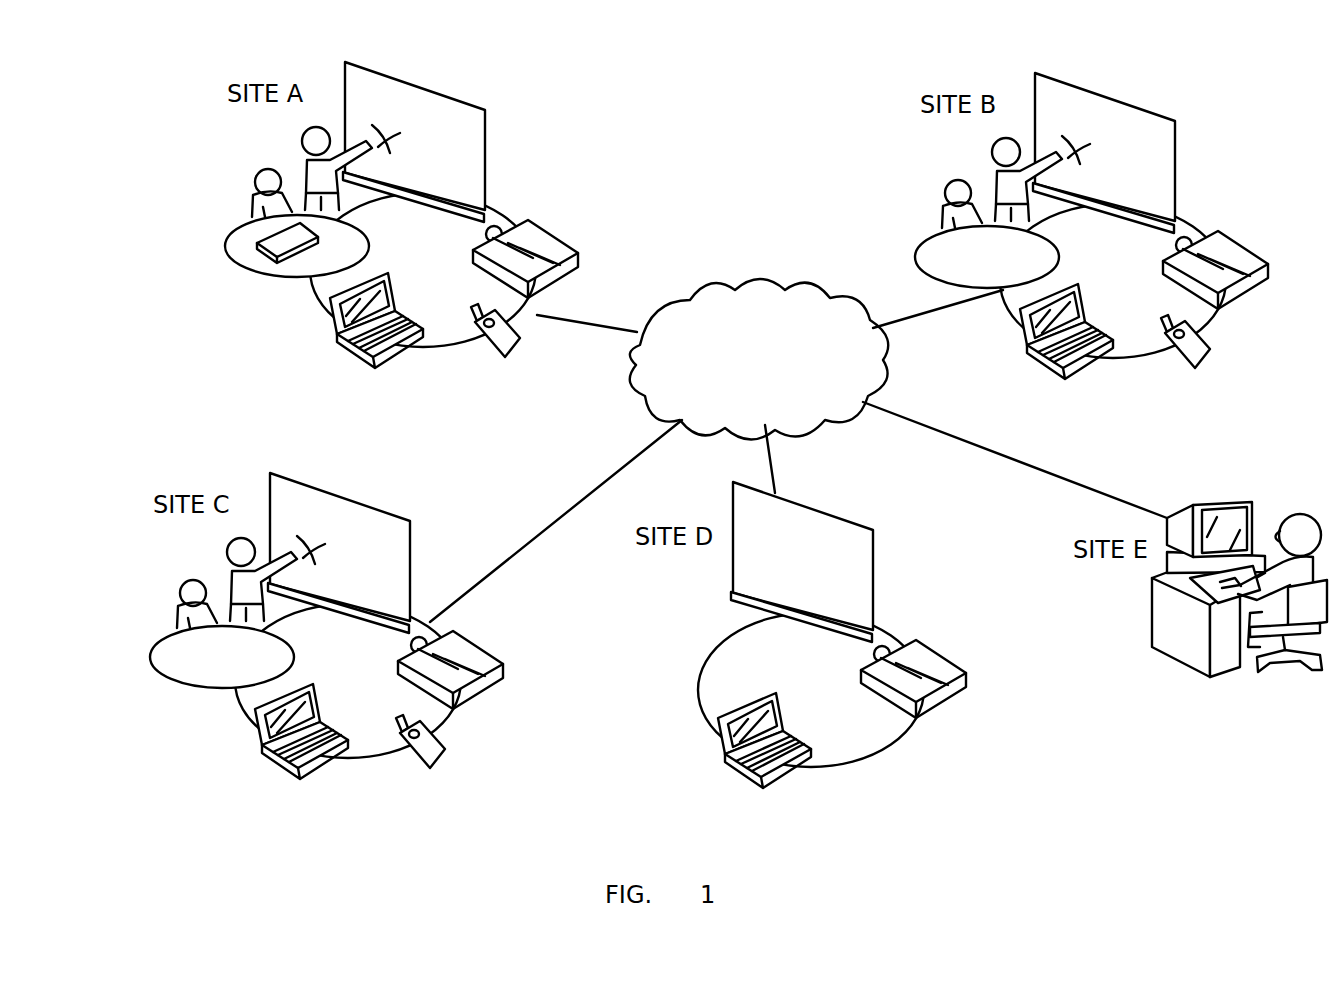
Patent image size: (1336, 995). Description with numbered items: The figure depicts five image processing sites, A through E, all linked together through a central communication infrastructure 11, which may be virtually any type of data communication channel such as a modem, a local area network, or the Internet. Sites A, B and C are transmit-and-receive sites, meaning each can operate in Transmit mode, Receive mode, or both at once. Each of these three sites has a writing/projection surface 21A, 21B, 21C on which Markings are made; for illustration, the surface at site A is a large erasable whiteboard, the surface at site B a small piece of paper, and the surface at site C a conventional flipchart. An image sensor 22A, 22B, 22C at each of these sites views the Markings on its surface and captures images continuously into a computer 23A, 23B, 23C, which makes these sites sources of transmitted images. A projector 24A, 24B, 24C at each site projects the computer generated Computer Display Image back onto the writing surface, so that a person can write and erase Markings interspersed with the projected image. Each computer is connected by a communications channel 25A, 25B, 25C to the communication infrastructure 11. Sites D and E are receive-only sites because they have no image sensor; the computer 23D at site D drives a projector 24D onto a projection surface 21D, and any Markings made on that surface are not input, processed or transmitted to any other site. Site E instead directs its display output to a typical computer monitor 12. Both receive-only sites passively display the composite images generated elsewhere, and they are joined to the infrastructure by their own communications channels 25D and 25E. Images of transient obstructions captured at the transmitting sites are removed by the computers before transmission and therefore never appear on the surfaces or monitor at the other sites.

The communication infrastructure 11 is at (761, 292).
The computer monitor 12 is at (1238, 500).
The writing/projection surface 21A is at (418, 85).
The writing/projection surface 21B is at (1106, 149).
The writing/projection surface 21C is at (377, 553).
The projection surface 21D is at (841, 562).
The image sensor 22A is at (498, 353).
The image sensor 22B is at (1161, 362).
The image sensor 22C is at (395, 761).
The computer 23A is at (337, 347).
The computer 23B is at (1036, 344).
The computer 23C is at (272, 745).
The computer 23D is at (739, 751).
The projector 24A is at (558, 228).
The projector 24B is at (1236, 262).
The projector 24C is at (474, 657).
The projector 24D is at (933, 667).
The communications channel 25A is at (590, 323).
The communications channel 25B is at (922, 317).
The communications channel 25C is at (589, 492).
The communications channel 25D is at (771, 459).
The communications channel 25E is at (1017, 465).